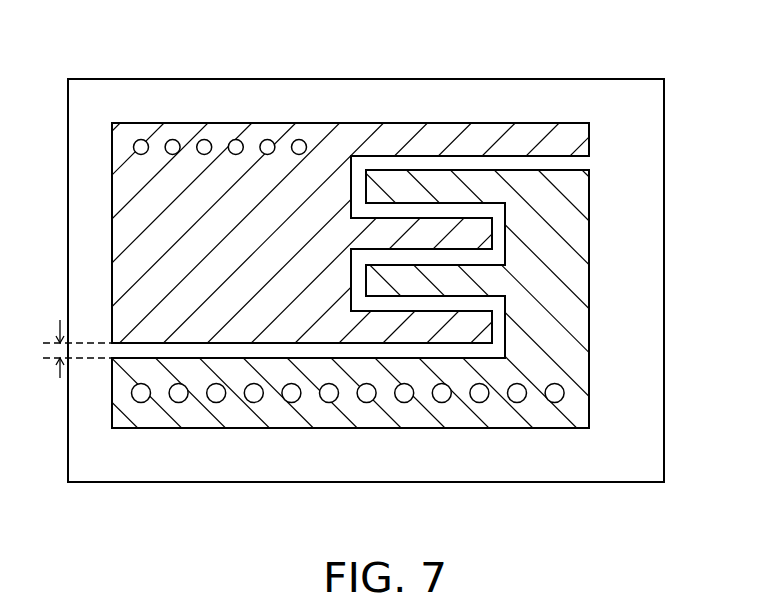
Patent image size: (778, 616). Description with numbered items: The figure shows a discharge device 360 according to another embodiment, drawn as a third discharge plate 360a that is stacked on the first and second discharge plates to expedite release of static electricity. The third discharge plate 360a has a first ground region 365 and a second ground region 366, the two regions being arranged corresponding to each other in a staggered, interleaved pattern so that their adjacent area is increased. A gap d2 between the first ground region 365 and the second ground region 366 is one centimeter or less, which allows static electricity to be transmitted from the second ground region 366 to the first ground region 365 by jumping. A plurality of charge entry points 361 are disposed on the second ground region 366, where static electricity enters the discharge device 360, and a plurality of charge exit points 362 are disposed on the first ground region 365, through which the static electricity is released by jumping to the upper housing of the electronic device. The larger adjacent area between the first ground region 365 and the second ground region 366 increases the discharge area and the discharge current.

The discharge device 360 is at (389, 285).
The third discharge plate 360a is at (647, 253).
The charge entry points 361 is at (287, 403).
The charge exit points 362 is at (204, 146).
The first ground region 365 is at (582, 136).
The second ground region 366 is at (153, 415).
The gap d2 is at (62, 349).